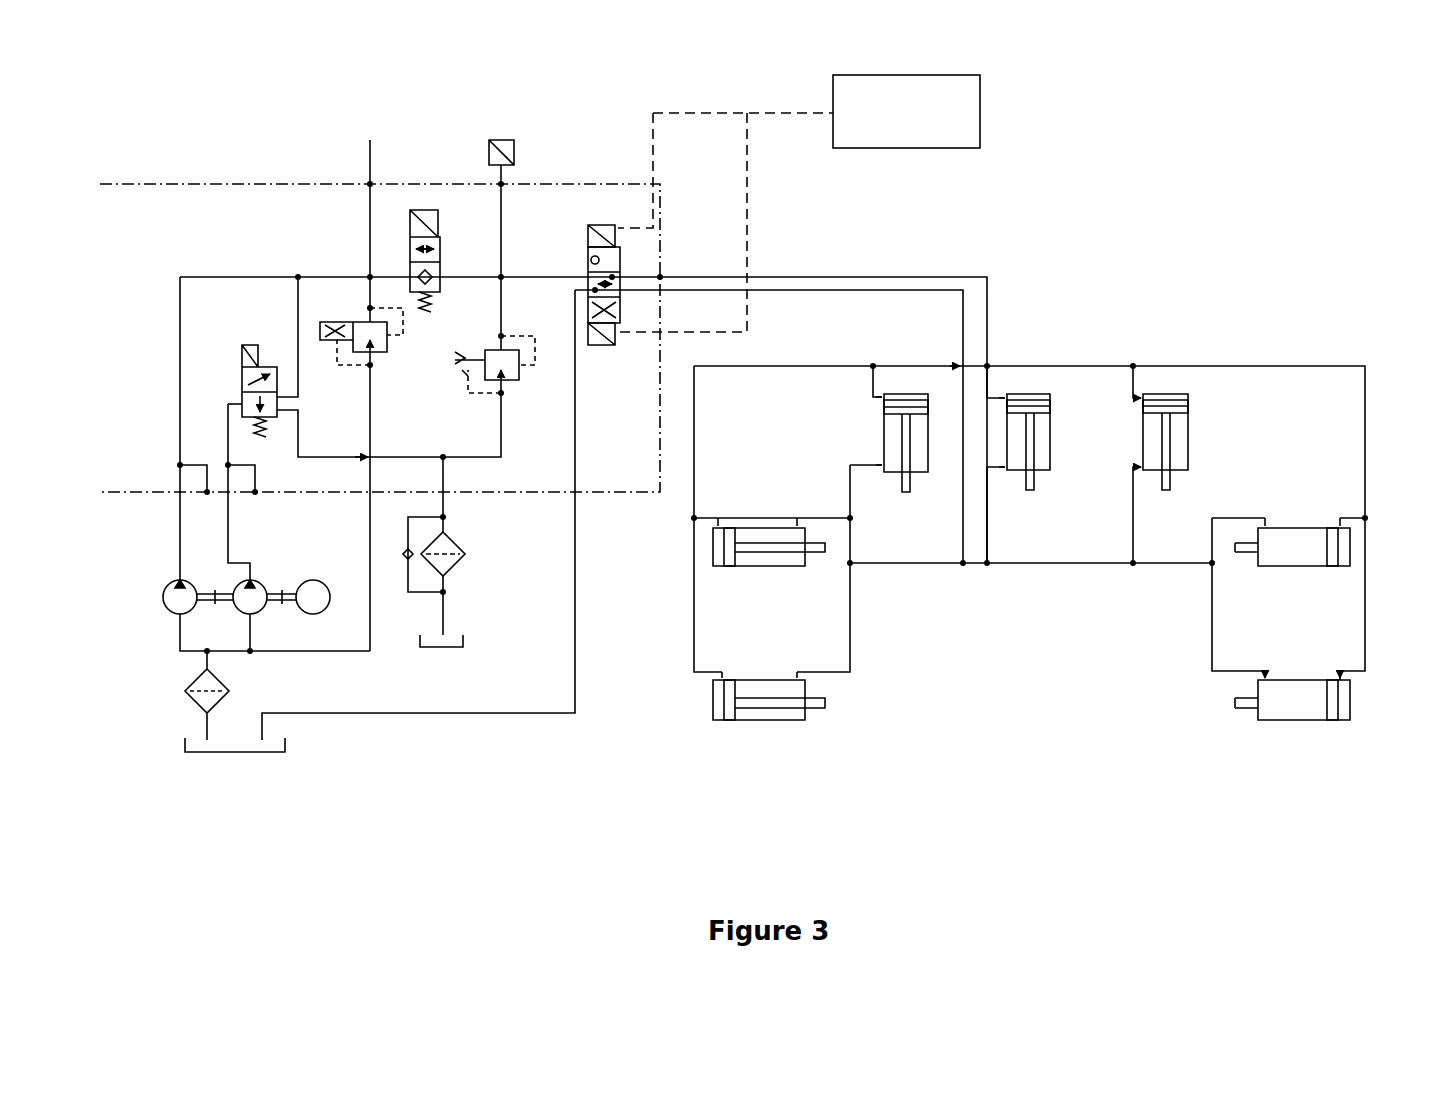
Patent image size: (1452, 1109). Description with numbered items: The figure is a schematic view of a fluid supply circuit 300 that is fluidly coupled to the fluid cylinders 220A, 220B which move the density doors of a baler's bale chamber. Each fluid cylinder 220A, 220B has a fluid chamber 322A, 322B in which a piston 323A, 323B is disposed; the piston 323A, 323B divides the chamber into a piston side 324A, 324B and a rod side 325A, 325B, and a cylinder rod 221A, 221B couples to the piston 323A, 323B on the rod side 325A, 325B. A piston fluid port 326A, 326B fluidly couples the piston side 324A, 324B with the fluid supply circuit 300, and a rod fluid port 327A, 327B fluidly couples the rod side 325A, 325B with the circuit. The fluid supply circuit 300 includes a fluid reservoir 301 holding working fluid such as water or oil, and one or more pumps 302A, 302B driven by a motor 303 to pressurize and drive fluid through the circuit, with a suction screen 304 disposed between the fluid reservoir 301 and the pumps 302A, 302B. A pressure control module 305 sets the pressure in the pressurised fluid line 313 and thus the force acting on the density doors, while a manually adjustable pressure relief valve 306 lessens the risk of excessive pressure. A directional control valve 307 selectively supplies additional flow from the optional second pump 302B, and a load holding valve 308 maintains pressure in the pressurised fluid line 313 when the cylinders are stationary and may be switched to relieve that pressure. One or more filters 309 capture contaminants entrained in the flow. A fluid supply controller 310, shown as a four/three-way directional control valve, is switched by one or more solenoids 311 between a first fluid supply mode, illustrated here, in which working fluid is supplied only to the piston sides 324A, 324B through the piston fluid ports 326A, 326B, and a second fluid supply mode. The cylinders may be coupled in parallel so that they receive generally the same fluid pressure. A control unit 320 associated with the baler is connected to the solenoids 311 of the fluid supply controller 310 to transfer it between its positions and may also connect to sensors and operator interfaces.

The fluid supply circuit 300 is at (600, 172).
The fluid reservoir 301 is at (184, 730).
The pump 302A is at (162, 606).
The second pump 302B is at (258, 582).
The motor 303 is at (313, 616).
The suction screen 304 is at (232, 692).
The pressure control module 305 is at (383, 372).
The manually adjustable pressure relief valve 306 is at (516, 395).
The directional control valve 307 is at (240, 352).
The load holding valve 308 is at (404, 246).
The filter 309 is at (464, 566).
The fluid supply controller 310 is at (626, 254).
The solenoid 311 is at (590, 230).
The pressurised fluid line 313 is at (478, 276).
The control unit 320 is at (940, 113).
The fluid cylinder 220A is at (901, 386).
The fluid cylinder 220B is at (700, 568).
The cylinder rod 221A is at (902, 450).
The cylinder rod 221B is at (755, 545).
The fluid chamber 322A is at (884, 440).
The fluid chamber 322B is at (770, 570).
The piston 323A is at (884, 410).
The piston 323B is at (728, 568).
The piston side 324A is at (916, 398).
The piston side 324B is at (718, 545).
The rod side 325A is at (930, 470).
The rod side 325B is at (770, 567).
The piston fluid port 326A is at (873, 380).
The piston fluid port 326B is at (724, 526).
The rod fluid port 327A is at (886, 475).
The rod fluid port 327B is at (797, 526).